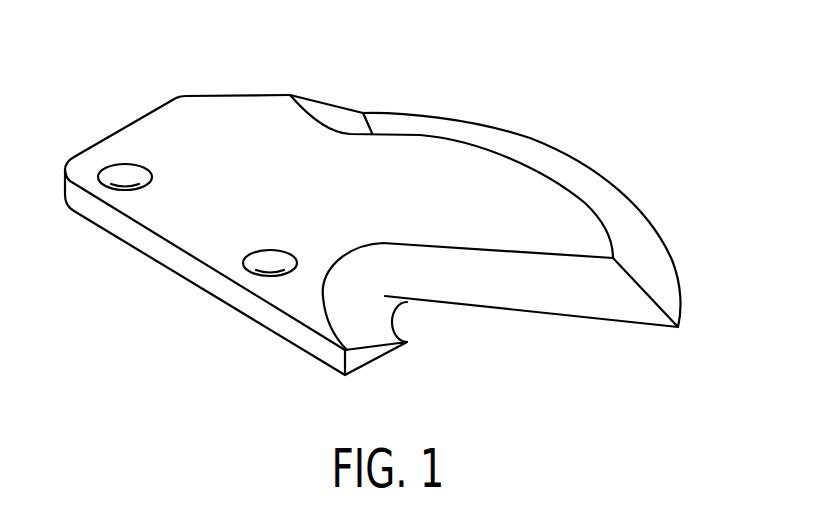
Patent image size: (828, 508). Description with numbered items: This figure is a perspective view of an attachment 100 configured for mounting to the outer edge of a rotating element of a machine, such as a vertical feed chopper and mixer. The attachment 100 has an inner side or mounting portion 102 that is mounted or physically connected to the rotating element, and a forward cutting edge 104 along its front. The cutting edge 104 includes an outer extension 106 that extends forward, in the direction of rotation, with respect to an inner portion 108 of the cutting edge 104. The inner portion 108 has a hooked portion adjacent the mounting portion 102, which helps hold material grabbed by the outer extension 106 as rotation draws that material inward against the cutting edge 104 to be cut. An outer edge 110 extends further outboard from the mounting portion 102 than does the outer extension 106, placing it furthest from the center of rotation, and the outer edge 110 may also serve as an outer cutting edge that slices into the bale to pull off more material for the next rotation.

The attachment 100 is at (258, 118).
The mounting portion 102 is at (185, 228).
The cutting edge 104 is at (480, 280).
The outer extension 106 is at (653, 330).
The inner portion 108 is at (387, 297).
The outer edge 110 is at (603, 183).